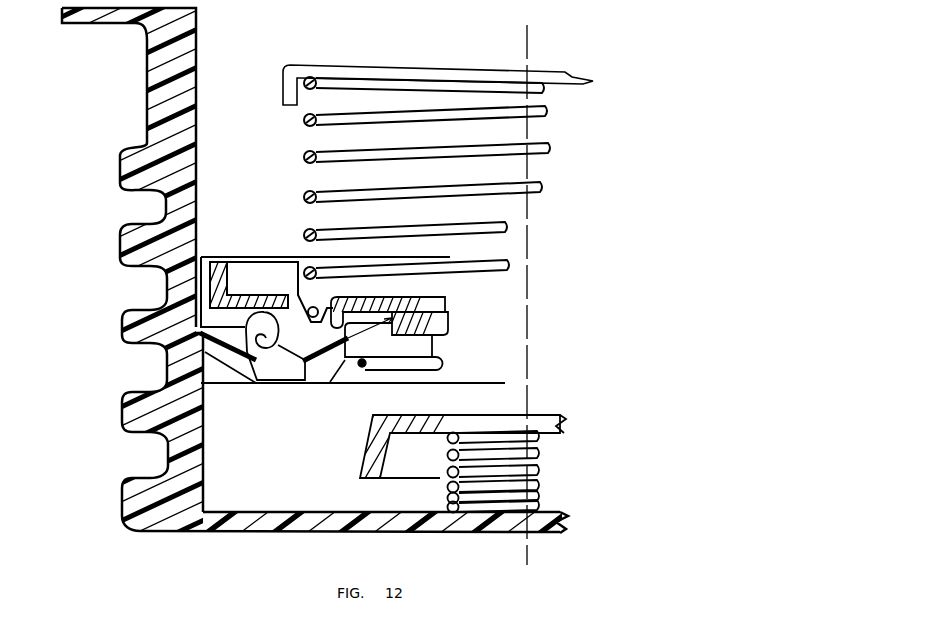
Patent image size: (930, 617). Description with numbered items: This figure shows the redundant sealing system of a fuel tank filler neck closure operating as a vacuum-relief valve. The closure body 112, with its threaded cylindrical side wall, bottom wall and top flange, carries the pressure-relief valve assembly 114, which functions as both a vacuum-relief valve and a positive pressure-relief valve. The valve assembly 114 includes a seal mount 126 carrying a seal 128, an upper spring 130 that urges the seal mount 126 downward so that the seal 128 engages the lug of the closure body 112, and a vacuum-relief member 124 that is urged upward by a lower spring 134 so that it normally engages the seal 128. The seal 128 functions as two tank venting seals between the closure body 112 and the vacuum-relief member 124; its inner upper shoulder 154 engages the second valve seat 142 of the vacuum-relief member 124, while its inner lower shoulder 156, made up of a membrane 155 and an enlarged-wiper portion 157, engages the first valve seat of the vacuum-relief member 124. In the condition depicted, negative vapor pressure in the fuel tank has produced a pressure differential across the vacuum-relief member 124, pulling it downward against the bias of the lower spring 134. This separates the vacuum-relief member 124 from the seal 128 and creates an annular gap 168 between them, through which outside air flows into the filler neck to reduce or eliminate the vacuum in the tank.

The closure body 112 is at (112, 302).
The pressure-relief valve assembly 114 is at (543, 333).
The vacuum-relief member 124 is at (405, 425).
The seal mount 126 is at (268, 293).
The seal 128 is at (290, 380).
The upper spring 130 is at (538, 148).
The lower spring 134 is at (540, 477).
The second valve seat 142 is at (397, 415).
The inner upper shoulder 154 is at (407, 328).
The membrane 155 is at (358, 364).
The inner lower shoulder 156 is at (330, 382).
The enlarged-wiper portion 157 is at (346, 357).
The annular gap 168 is at (373, 398).